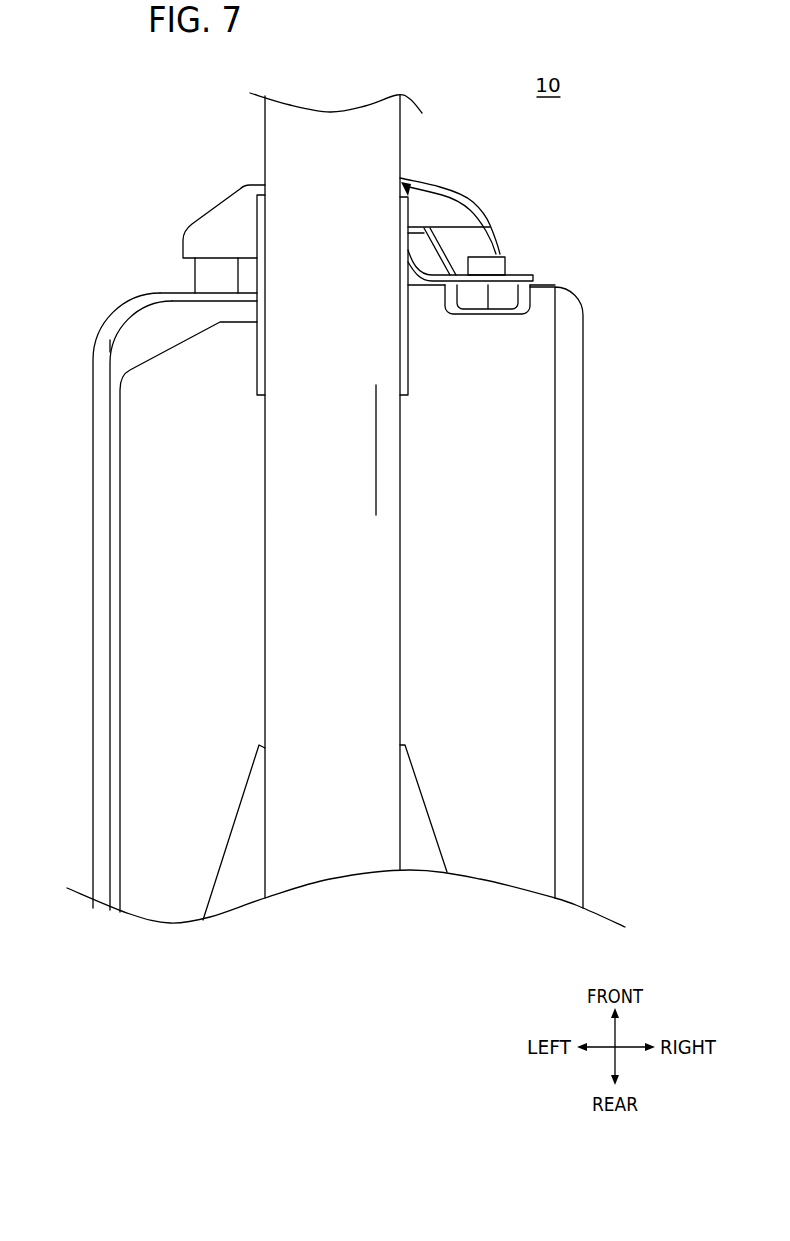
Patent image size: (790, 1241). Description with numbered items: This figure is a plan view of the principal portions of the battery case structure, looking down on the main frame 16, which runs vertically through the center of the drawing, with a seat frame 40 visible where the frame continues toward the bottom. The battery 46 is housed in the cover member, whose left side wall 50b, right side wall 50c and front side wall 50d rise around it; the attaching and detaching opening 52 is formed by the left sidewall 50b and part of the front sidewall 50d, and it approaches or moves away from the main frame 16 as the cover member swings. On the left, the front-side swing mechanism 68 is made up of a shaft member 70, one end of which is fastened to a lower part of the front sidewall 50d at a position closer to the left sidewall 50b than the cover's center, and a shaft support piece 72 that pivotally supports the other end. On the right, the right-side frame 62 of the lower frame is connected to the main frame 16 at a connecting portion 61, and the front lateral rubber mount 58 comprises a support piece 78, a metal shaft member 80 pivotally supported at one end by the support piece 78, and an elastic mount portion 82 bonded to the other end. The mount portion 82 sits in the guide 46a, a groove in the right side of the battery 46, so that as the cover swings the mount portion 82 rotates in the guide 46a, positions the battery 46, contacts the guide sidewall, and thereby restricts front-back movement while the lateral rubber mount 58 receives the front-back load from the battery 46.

The main frame 16 is at (384, 603).
The seat frame 40 is at (413, 793).
The battery 46 is at (137, 472).
The guide 46a is at (545, 306).
The left side wall 50b is at (95, 562).
The right side wall 50c is at (583, 562).
The front side wall 50d is at (168, 292).
The attaching and detaching opening 52 is at (126, 351).
The lateral rubber mount 58 is at (522, 235).
The connecting portion 61 is at (415, 188).
The right-side frame 62 is at (450, 200).
The front-side swing mechanism 68 is at (206, 203).
The shaft member 70 is at (207, 277).
The shaft support piece 72 is at (207, 221).
The support piece 78 is at (473, 237).
The shaft member 80 is at (488, 262).
The mount portion 82 is at (498, 266).